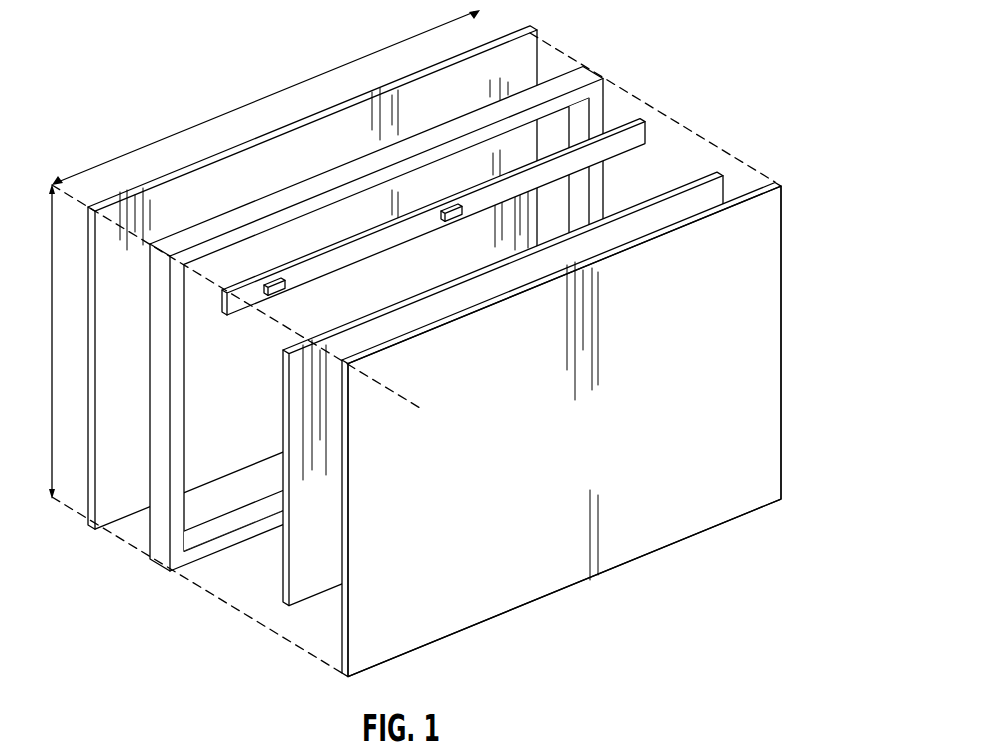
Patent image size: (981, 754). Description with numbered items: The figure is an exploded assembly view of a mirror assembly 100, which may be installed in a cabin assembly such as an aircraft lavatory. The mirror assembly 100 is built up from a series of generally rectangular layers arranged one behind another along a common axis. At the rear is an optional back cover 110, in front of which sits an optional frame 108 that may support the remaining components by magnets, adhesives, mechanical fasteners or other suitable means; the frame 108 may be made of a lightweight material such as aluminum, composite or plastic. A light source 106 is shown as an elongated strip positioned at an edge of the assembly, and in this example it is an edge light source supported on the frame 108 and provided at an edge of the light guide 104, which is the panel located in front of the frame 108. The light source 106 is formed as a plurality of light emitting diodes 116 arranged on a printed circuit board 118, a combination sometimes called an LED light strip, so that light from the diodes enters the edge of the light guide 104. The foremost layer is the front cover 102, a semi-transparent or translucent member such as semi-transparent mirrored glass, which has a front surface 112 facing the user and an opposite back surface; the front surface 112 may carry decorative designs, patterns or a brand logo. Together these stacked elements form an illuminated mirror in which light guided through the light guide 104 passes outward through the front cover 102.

The mirror assembly 100 is at (700, 48).
The front cover 102 is at (756, 188).
The light guide 104 is at (296, 585).
The light source 106 is at (614, 141).
The frame 108 is at (578, 76).
The back cover 110 is at (503, 60).
The front surface 112 is at (762, 475).
The light emitting diodes 116 is at (279, 291).
The printed circuit board 118 is at (643, 103).